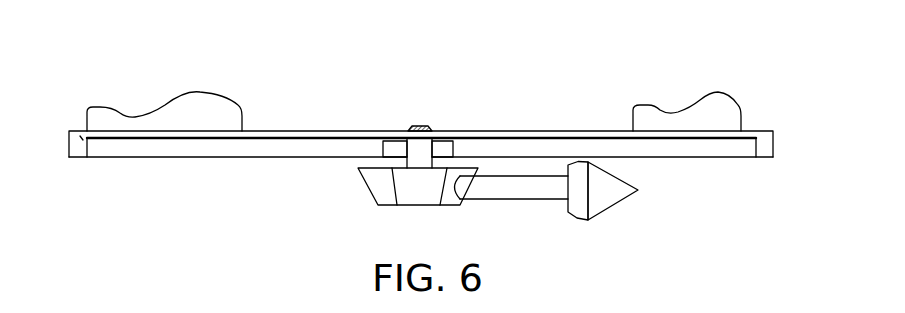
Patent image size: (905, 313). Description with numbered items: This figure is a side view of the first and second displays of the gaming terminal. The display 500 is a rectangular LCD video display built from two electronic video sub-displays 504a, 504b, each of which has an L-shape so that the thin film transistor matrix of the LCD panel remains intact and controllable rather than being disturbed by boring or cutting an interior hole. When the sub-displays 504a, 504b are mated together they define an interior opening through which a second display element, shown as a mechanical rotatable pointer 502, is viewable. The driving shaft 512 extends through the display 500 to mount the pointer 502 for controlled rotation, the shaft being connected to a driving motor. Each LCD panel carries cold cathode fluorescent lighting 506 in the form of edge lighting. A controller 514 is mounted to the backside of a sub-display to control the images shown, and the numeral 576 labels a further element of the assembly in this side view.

The display 500 is at (512, 103).
The rotatable pointer 502 is at (505, 199).
The sub-display 504a is at (270, 158).
The sub-display 504b is at (680, 157).
The cold cathode fluorescent lighting 506 is at (83, 134).
The driving shaft 512 is at (418, 126).
The controller 514 is at (705, 113).
The left raised contact 576 is at (207, 117).